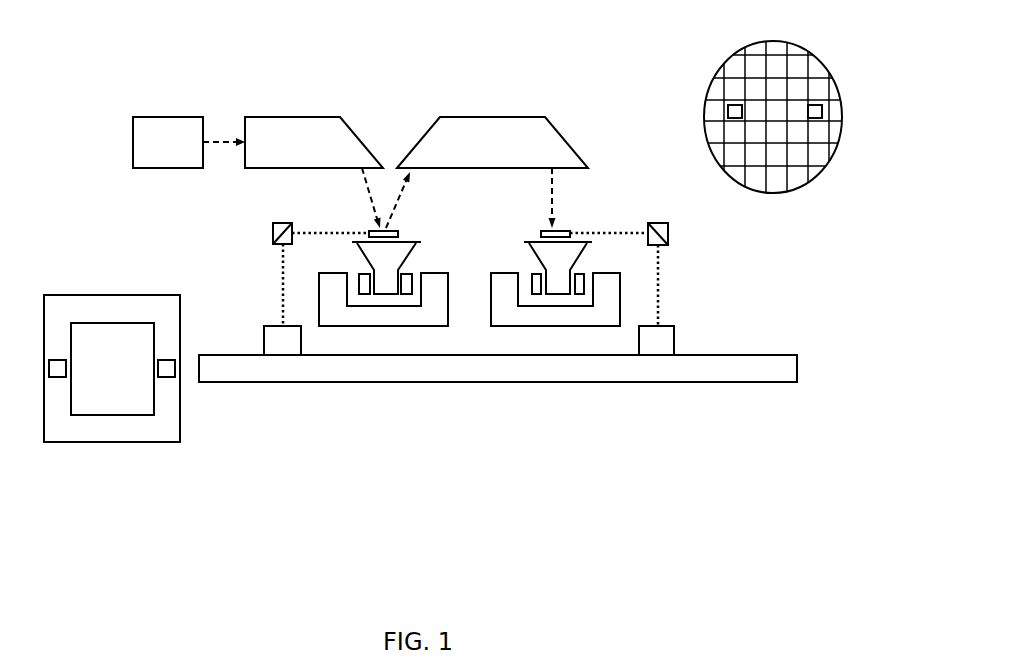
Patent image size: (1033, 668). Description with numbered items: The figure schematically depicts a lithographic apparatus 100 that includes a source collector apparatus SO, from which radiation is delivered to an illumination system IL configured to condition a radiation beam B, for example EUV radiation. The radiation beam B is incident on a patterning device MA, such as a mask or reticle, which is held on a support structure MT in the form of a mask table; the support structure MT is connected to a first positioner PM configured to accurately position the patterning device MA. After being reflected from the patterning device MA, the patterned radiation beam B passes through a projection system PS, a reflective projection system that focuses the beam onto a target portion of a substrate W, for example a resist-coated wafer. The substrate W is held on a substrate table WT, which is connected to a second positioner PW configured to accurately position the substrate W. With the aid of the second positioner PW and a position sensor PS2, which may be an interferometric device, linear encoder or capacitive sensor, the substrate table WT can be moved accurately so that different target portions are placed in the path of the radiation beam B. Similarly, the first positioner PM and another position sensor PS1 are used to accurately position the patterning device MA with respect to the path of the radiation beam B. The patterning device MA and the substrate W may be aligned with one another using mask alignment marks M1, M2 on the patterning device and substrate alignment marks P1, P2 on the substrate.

The lithographic apparatus 100 is at (558, 80).
The source collector apparatus SO is at (189, 142).
The illumination system IL is at (314, 142).
The projection system PS is at (492, 142).
The radiation beam B is at (370, 200).
The position sensor PS1 is at (277, 222).
The position sensor PS2 is at (668, 233).
The patterning device MA is at (90, 295).
The mask alignment mark M1 is at (165, 377).
The mask alignment mark M2 is at (57, 377).
The support structure MT is at (380, 294).
The first positioner PM is at (418, 326).
The substrate W is at (698, 147).
The substrate table WT is at (552, 294).
The second positioner PW is at (585, 326).
The substrate alignment mark P1 is at (735, 118).
The substrate alignment mark P2 is at (815, 118).